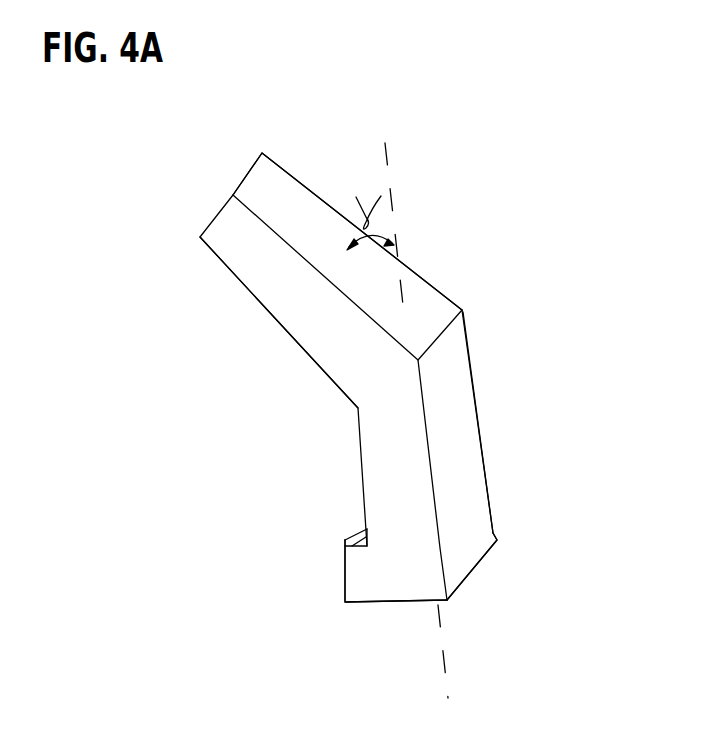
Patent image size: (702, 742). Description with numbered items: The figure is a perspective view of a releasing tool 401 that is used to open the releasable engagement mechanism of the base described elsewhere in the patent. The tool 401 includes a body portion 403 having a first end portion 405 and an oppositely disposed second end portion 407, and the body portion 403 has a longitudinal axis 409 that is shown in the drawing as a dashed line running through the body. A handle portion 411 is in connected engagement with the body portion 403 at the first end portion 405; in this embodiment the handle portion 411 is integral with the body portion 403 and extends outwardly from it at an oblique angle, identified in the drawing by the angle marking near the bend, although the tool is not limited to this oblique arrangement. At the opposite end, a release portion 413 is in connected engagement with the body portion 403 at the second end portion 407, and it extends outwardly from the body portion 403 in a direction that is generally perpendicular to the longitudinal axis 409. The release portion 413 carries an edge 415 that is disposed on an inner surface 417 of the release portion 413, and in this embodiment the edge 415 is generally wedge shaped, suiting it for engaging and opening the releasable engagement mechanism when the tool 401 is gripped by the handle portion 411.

The releasing tool 401 is at (518, 283).
The body portion 403 is at (472, 446).
The first end portion 405 is at (463, 352).
The second end portion 407 is at (484, 534).
The longitudinal axis 409 is at (385, 147).
The handle portion 411 is at (268, 310).
The release portion 413 is at (345, 571).
The edge 415 is at (343, 541).
The inner surface 417 is at (367, 529).